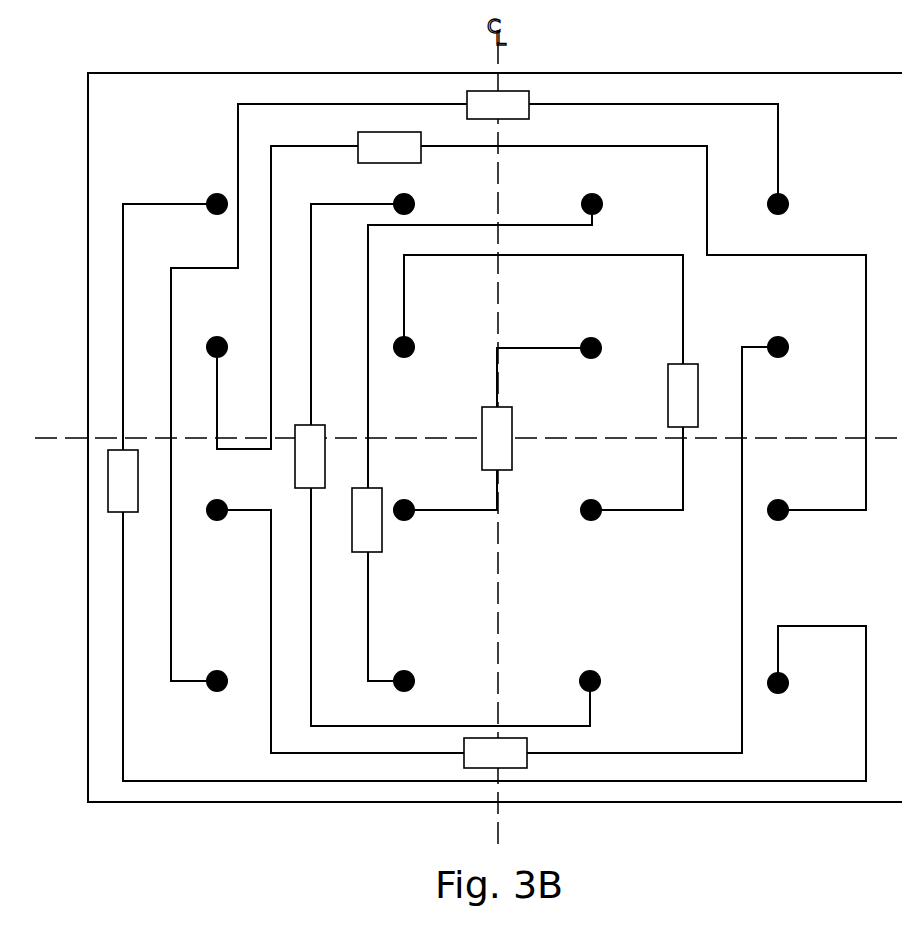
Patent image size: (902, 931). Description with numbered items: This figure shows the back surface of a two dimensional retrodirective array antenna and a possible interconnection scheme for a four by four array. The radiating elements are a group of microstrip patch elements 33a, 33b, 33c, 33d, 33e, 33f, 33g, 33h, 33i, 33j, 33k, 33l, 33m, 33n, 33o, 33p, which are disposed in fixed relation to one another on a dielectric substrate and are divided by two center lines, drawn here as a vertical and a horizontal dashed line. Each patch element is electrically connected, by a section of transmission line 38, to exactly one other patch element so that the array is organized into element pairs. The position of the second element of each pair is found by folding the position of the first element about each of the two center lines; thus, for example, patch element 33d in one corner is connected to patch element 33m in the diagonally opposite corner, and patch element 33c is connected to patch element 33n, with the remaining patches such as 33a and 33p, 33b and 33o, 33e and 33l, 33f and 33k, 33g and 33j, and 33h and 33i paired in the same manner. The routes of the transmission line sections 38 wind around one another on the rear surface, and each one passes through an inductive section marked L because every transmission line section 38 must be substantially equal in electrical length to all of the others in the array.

The transmission line section 38 is at (368, 443).
The microstrip patch element 33a is at (789, 208).
The microstrip patch element 33b is at (601, 200).
The microstrip patch element 33c is at (414, 206).
The microstrip patch element 33d is at (217, 194).
The microstrip patch element 33e is at (782, 338).
The microstrip patch element 33f is at (594, 338).
The microstrip patch element 33g is at (414, 341).
The microstrip patch element 33h is at (240, 314).
The microstrip patch element 33i is at (776, 498).
The microstrip patch element 33j is at (580, 499).
The microstrip patch element 33k is at (403, 498).
The microstrip patch element 33l is at (207, 504).
The microstrip patch element 33m is at (778, 694).
The microstrip patch element 33n is at (596, 671).
The microstrip patch element 33o is at (415, 683).
The microstrip patch element 33p is at (226, 674).